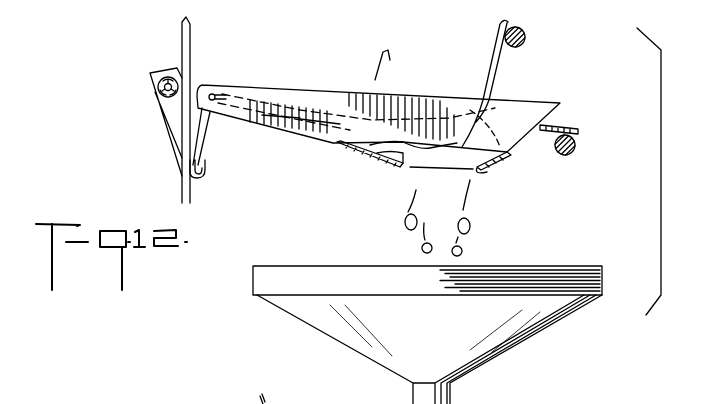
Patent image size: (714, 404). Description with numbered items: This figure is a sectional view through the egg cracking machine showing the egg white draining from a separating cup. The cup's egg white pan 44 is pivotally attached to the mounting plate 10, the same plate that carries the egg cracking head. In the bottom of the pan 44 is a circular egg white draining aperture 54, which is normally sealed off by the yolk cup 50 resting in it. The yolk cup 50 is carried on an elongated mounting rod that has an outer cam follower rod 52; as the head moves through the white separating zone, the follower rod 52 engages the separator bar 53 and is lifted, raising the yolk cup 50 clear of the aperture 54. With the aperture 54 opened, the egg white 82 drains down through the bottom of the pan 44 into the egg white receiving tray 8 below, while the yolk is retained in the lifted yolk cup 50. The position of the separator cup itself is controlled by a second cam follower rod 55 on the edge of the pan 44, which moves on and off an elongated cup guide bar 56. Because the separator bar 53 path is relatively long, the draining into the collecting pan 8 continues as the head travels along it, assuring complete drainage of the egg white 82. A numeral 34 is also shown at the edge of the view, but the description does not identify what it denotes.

The egg white receiving tray 8 is at (546, 322).
The mounting plate 10 is at (188, 79).
The receptacle 34 is at (287, 394).
The egg white pan 44 is at (530, 100).
The yolk cup 50 is at (430, 143).
The cam follower rod 52 is at (503, 25).
The separator bar 53 is at (527, 38).
The egg white draining aperture 54 is at (473, 172).
The cam follower rod 55 is at (567, 127).
The cup guide bar 56 is at (575, 147).
The egg white 82 is at (474, 240).